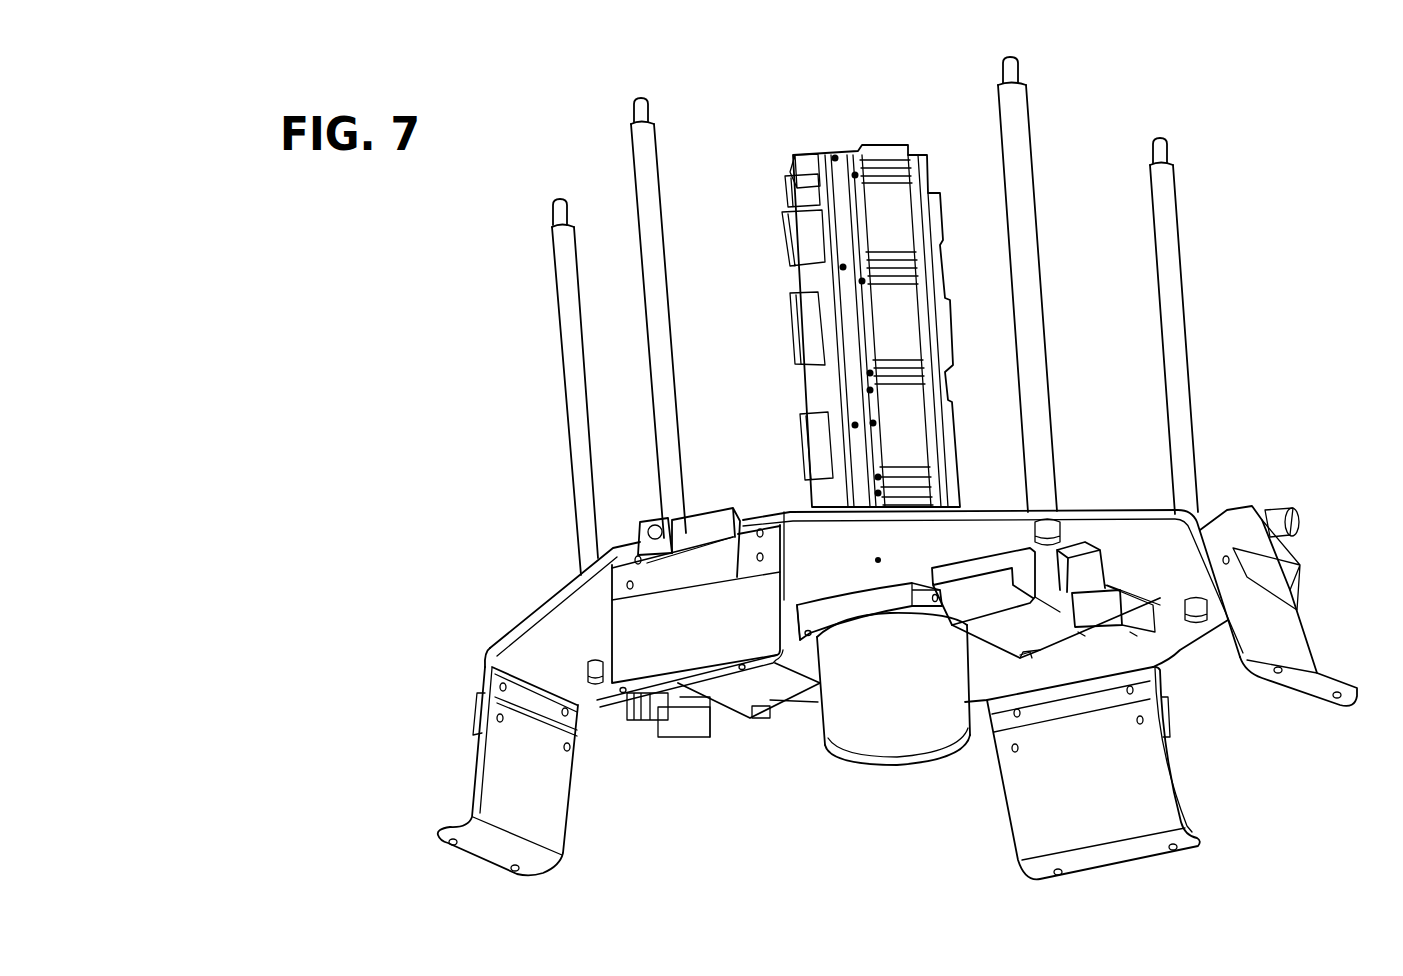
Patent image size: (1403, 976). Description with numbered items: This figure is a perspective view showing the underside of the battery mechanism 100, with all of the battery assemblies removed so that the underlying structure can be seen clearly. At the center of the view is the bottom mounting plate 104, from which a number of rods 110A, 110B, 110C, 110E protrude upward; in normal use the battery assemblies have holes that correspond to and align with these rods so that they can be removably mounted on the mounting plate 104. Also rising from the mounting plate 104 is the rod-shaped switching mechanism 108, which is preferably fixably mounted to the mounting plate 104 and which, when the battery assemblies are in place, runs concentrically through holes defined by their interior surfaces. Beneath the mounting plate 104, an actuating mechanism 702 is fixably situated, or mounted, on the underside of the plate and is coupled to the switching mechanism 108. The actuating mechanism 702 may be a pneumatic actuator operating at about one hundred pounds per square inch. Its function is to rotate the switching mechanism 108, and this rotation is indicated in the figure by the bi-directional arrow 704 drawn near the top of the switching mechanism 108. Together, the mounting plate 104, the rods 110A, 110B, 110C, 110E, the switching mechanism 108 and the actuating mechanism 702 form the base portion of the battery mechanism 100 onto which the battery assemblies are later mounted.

The battery mechanism 100 is at (364, 547).
The mounting plate 104 is at (1130, 522).
The switching mechanism 108 is at (887, 157).
The rod 110A is at (1025, 170).
The rod 110B is at (562, 297).
The rod 110C is at (652, 162).
The rod 110E is at (1167, 220).
The actuating mechanism 702 is at (908, 740).
The bi-directional arrow 704 is at (858, 128).